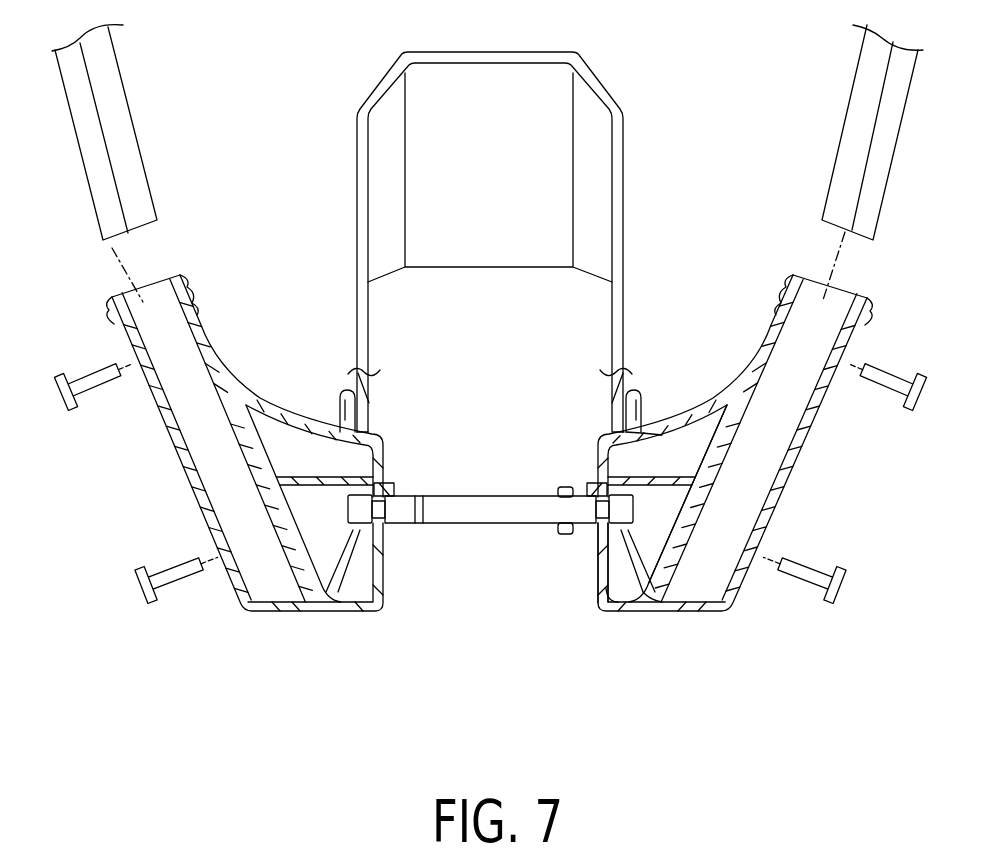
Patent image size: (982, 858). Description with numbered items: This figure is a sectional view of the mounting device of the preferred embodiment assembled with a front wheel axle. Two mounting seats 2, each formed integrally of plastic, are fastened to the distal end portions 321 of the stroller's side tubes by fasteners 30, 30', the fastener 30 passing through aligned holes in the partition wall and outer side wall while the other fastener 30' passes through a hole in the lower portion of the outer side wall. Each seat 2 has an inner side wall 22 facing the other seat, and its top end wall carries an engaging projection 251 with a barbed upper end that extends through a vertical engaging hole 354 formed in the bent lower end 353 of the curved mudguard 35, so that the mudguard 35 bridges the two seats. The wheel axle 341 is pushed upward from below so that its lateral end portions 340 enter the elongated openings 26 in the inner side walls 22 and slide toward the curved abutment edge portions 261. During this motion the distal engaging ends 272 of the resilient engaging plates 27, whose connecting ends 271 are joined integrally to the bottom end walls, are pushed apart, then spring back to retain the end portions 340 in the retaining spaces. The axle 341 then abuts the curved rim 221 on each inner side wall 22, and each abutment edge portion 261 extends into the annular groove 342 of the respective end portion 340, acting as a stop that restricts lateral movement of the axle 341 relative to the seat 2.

The mounting seat 2 is at (335, 622).
The inner side wall 22 is at (381, 450).
The curved rim 221 is at (393, 488).
The elongated opening 26 is at (612, 563).
The curved abutment edge portion 261 is at (386, 483).
The resilient engaging plate 27 is at (640, 557).
The connecting end 271 is at (650, 603).
The distal engaging end 272 is at (608, 603).
The fastener 30 is at (490, 419).
The fastener 30' is at (490, 626).
The distal end portion 321 is at (124, 146).
The lateral end portion 340 is at (357, 508).
The wheel axle 341 is at (503, 511).
The annular groove 342 is at (378, 525).
The curved mudguard 35 is at (624, 210).
The bent lower end 353 is at (643, 418).
The vertical engaging hole 354 is at (623, 418).
The engaging projection 251 is at (632, 395).